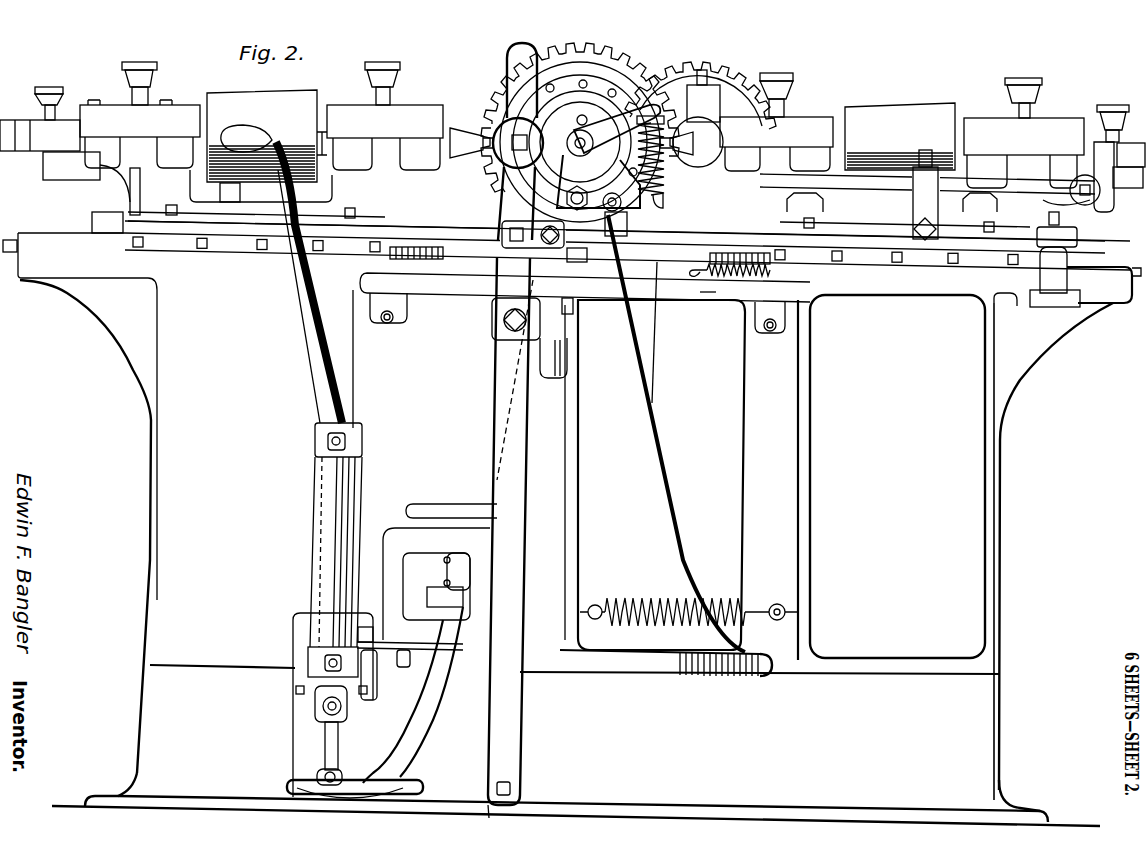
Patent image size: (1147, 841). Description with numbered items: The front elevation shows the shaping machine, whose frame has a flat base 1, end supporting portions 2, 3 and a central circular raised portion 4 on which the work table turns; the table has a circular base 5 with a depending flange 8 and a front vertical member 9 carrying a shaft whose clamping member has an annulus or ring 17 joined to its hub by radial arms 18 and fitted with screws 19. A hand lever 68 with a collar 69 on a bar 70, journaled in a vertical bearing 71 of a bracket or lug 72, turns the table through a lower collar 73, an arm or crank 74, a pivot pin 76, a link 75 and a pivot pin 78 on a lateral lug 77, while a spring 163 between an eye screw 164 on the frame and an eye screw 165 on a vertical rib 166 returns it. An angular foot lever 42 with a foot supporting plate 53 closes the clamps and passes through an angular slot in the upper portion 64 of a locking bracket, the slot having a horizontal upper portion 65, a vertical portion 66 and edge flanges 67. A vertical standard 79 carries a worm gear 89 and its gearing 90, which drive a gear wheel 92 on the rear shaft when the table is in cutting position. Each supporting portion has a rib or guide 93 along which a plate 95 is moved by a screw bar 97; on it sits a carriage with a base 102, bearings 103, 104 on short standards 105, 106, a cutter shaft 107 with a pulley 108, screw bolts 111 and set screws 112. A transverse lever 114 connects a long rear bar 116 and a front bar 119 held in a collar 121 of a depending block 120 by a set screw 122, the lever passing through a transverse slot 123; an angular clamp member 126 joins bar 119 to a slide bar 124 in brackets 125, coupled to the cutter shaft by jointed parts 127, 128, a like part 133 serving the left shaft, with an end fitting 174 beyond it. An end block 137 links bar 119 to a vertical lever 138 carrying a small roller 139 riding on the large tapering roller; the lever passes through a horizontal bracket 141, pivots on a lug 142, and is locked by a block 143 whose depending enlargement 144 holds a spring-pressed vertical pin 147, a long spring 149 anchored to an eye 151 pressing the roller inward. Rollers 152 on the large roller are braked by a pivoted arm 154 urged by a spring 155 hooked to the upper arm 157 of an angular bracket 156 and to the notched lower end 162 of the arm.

The base 1 is at (576, 777).
The supporting portion 2 is at (282, 404).
The supporting portion 3 is at (891, 477).
The raised portion 4 is at (756, 677).
The circular base 5 is at (607, 651).
The annular depending flange 8 is at (594, 675).
The front vertical member 9 is at (655, 475).
The annulus or ring 17 is at (624, 95).
The radial arms 18 is at (582, 115).
The screws 19 is at (587, 82).
The angular foot lever 42 is at (413, 695).
The foot supporting plate 53 is at (410, 784).
The bracket 64 is at (440, 572).
The horizontal upper portion of angular slot 65 is at (460, 560).
The vertical portion of angular slot 66 is at (430, 599).
The edge flanges 67 is at (447, 564).
The hand lever 68 is at (308, 308).
The collar 69 is at (320, 442).
The bar 70 is at (318, 472).
The vertical bearing 71 is at (322, 512).
The bracket or lug 72 is at (333, 705).
The collar 73 is at (322, 662).
The arm or crank 74 is at (369, 674).
The link 75 is at (390, 644).
The pivot pin 76 is at (364, 628).
The lateral lug 77 is at (411, 662).
The pivot pin 78 is at (445, 639).
The vertical standard 79 is at (676, 433).
The worm gear 89 is at (724, 84).
The gear 90 is at (708, 78).
The gear wheel 92 is at (497, 104).
The raised rib or guide 93 is at (579, 503).
The plate 95 is at (575, 253).
The screw bar 97 is at (11, 240).
The carriage base 102 is at (226, 218).
The bearing 103 is at (580, 116).
The bearing 104 is at (582, 125).
The vertical standard 105 is at (140, 181).
The vertical standard 106 is at (377, 181).
The cutter shaft 107 is at (322, 133).
The pulley 108 is at (581, 136).
The screw bolts 111 is at (892, 205).
The set screw 112 is at (259, 200).
The transverse lever 114 is at (1050, 303).
The longitudinal bar 116 is at (420, 232).
The longitudinal bar 119 is at (982, 245).
The depending block 120 is at (1047, 272).
The collar 121 is at (1072, 239).
The set screw 122 is at (1060, 221).
The transverse slot 123 is at (1075, 305).
The longitudinal slide bar 124 is at (857, 176).
The forwardly extending brackets 125 is at (1104, 217).
The angular clamp member 126 is at (918, 209).
The transverse connection part 127 is at (1108, 150).
The transverse connection part 128 is at (1102, 178).
The transverse connection part 133 is at (70, 162).
The enlarged end block 137 is at (514, 225).
The vertical lever 138 is at (497, 372).
The small narrow roller 139 is at (510, 152).
The horizontal bracket 141 is at (660, 297).
The lug 142 is at (518, 800).
The block 143 is at (494, 314).
The vertical depending enlargement 144 is at (540, 360).
The vertical pin 147 is at (574, 306).
The long spiral spring 149 is at (708, 293).
The eye 151 is at (690, 272).
The rollers 152 is at (535, 76).
The pivoted arm 154 is at (648, 212).
The spring 155 is at (664, 180).
The angular bracket 156 is at (580, 156).
The upper arm 157 is at (617, 129).
The notched lower end 162 is at (662, 202).
The spring 163 is at (641, 610).
The eye screw 164 is at (596, 605).
The eye screw 165 is at (777, 604).
The vertical rib 166 is at (800, 608).
The valve 174 is at (70, 117).